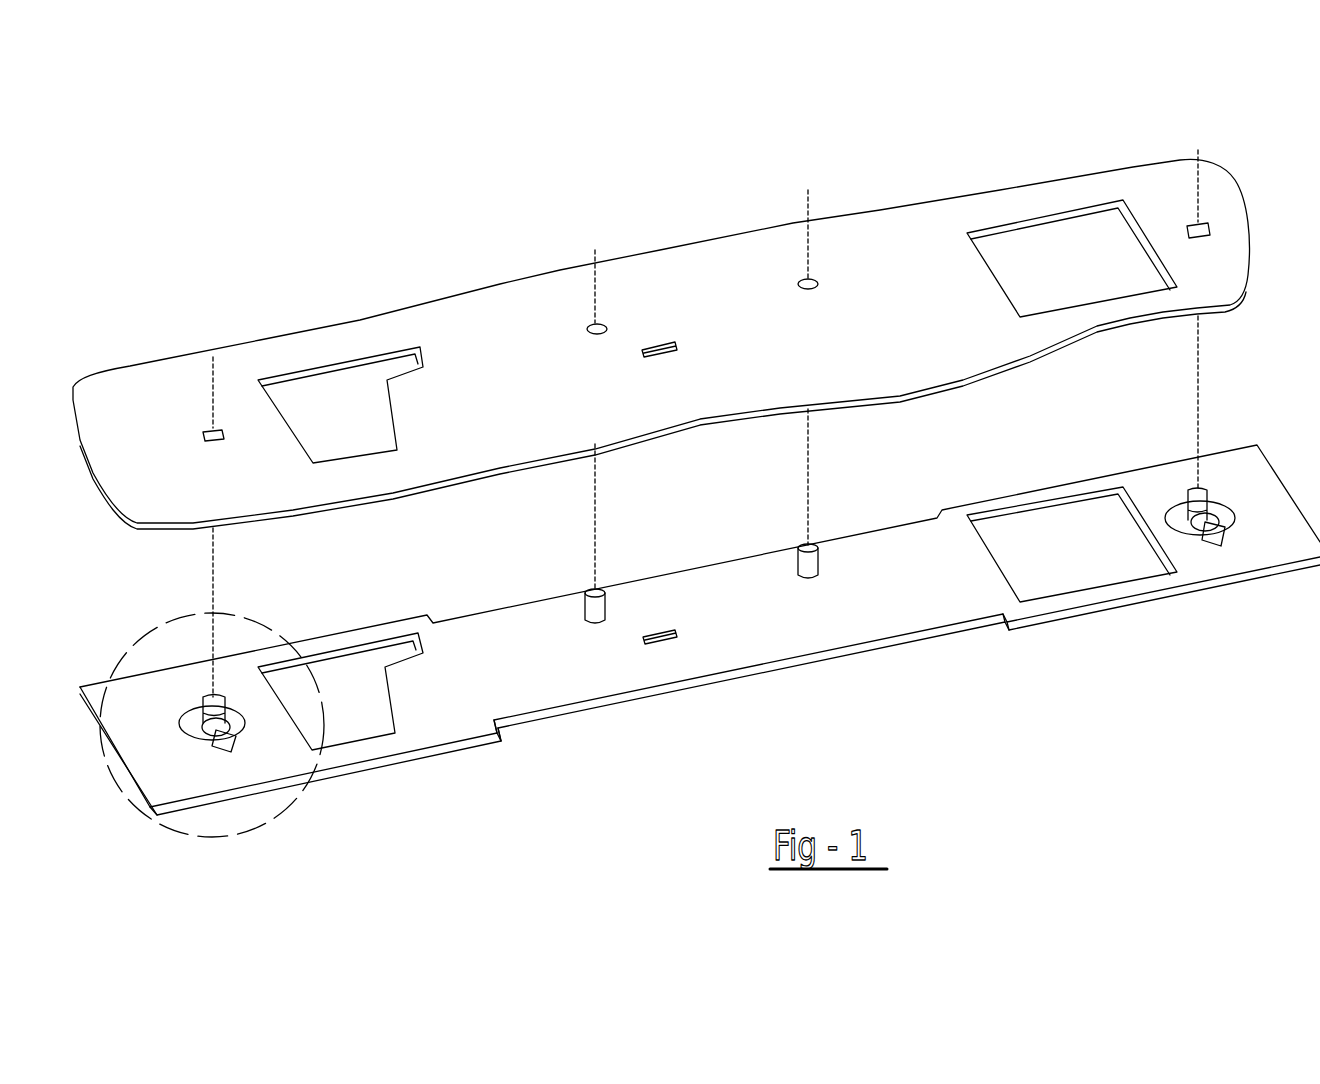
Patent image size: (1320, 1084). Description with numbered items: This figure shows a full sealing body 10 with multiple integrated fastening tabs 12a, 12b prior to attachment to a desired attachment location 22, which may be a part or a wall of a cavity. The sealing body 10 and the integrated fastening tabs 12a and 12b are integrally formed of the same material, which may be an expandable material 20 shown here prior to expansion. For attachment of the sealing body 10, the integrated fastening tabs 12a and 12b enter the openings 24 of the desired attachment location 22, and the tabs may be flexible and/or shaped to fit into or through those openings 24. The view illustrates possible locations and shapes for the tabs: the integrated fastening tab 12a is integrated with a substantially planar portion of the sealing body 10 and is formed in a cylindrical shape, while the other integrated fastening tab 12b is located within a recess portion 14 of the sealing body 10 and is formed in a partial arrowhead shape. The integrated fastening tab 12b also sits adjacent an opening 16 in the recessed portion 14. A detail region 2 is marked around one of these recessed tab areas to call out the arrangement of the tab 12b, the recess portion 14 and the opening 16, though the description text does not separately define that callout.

The detail view circle 2 is at (210, 612).
The sealing body 10 is at (757, 664).
The integrated fastening tab 12a is at (800, 560).
The integrated fastening tab 12b is at (222, 693).
The recess portion 14 is at (190, 713).
The opening 16 is at (232, 742).
The expandable material 20 is at (468, 725).
The desired attachment location 22 is at (540, 402).
The openings 24 is at (208, 430).